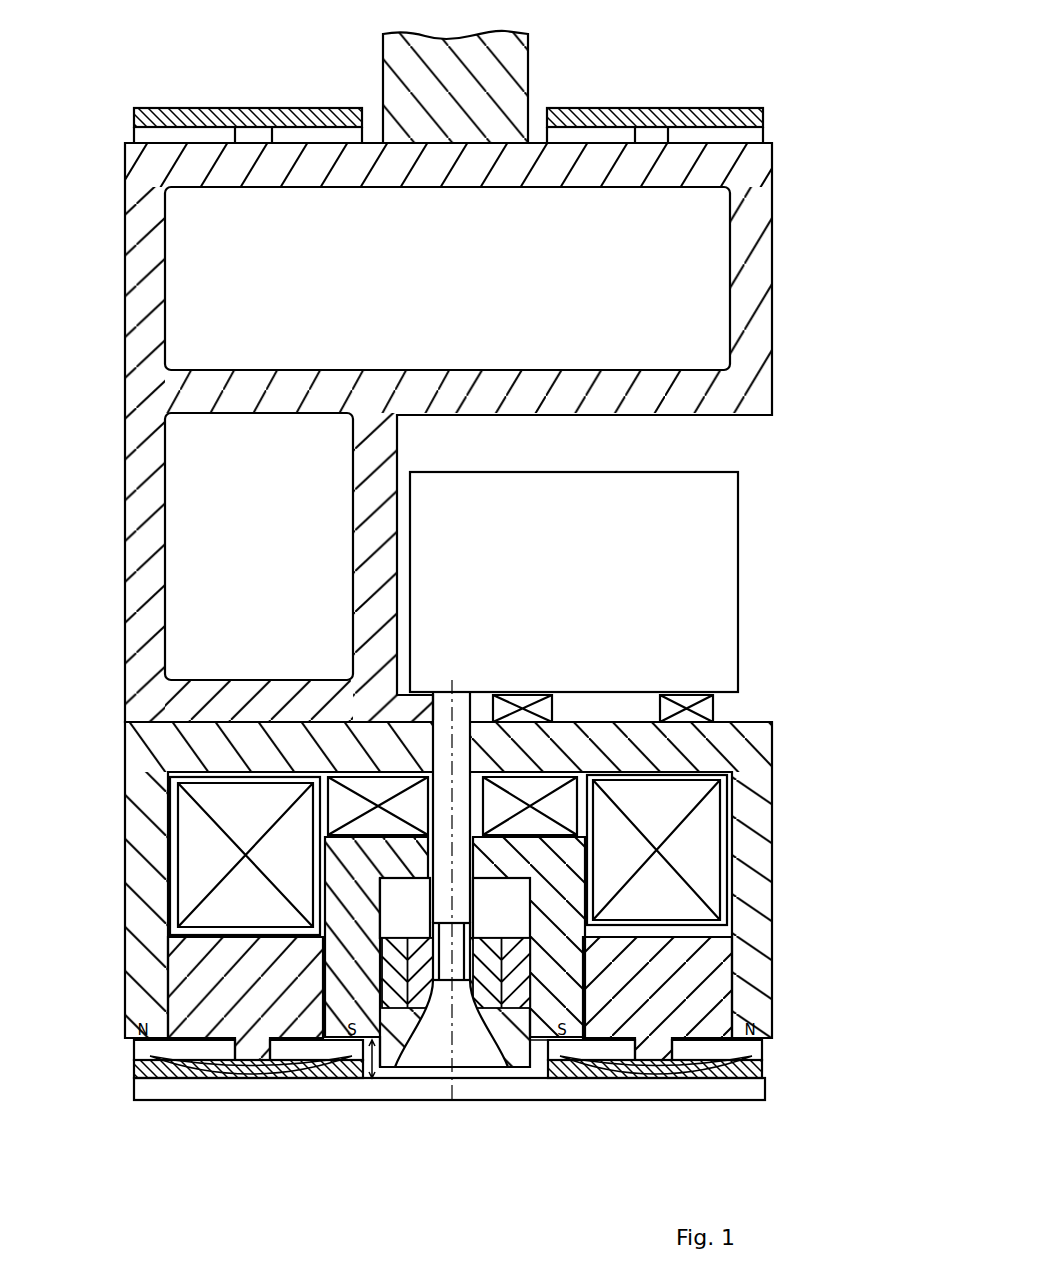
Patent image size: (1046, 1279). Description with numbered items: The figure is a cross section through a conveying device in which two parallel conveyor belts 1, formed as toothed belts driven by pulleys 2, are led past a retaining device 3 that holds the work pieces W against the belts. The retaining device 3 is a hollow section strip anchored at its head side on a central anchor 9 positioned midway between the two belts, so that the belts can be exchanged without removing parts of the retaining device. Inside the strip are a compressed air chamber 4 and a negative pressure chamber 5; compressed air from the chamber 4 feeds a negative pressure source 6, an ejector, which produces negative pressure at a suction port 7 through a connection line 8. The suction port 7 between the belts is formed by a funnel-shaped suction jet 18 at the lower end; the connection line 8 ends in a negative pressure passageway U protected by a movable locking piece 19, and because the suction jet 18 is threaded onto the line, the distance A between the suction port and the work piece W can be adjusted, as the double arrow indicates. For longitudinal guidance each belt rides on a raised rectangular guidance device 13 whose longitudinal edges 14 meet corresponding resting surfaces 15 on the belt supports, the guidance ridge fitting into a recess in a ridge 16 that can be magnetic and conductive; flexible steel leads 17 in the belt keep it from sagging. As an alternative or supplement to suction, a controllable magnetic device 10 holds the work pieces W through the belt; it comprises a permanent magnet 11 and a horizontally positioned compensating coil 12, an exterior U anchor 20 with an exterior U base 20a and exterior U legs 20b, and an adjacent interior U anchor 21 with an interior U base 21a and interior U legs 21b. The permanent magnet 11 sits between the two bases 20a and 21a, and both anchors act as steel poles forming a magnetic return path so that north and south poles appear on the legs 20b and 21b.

The conveyor belt 1 is at (295, 110).
The pulley 2 is at (197, 130).
The retaining device 3 is at (765, 453).
The compressed air chamber 4 is at (478, 279).
The negative pressure chamber 5 is at (243, 497).
The negative pressure source 6 is at (555, 549).
The suction port 7 is at (432, 1082).
The connection line 8 is at (462, 705).
The central anchor 9 is at (515, 75).
The magnetic device 10 is at (232, 775).
The permanent magnet 11 is at (545, 775).
The compensating coil 12 is at (265, 790).
The guidance device 13 is at (250, 1080).
The longitudinal edge 14 is at (150, 1048).
The resting surface 15 is at (195, 1080).
The ridge 16 is at (185, 985).
The flexible steel lead 17 is at (565, 1060).
The suction jet 18 is at (478, 1060).
The locking piece 19 is at (501, 908).
The exterior U anchor 20 is at (748, 720).
The exterior U base 20a is at (628, 735).
The exterior U leg 20b is at (762, 825).
The interior U anchor 21 is at (582, 868).
The interior U base 21a is at (395, 850).
The interior U leg 21b is at (345, 905).
The negative pressure passageway U is at (418, 921).
The distance A is at (373, 1082).
The work piece W is at (735, 1100).